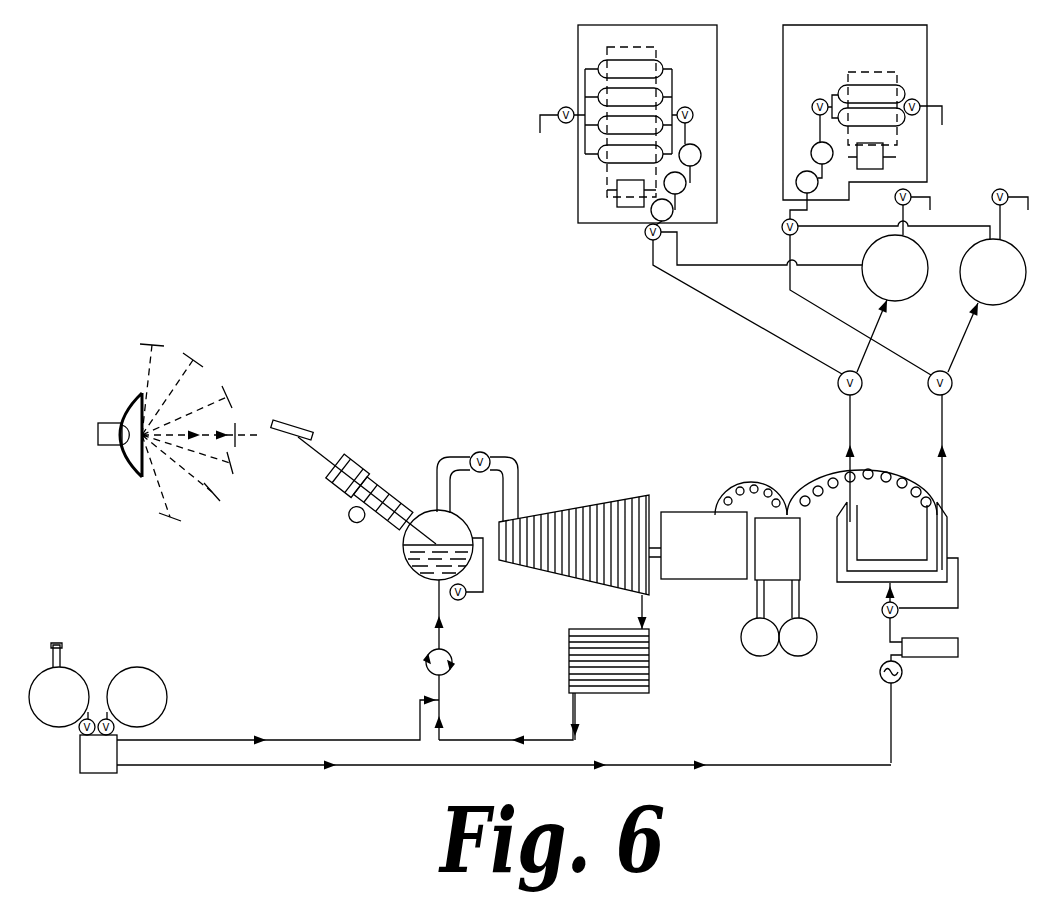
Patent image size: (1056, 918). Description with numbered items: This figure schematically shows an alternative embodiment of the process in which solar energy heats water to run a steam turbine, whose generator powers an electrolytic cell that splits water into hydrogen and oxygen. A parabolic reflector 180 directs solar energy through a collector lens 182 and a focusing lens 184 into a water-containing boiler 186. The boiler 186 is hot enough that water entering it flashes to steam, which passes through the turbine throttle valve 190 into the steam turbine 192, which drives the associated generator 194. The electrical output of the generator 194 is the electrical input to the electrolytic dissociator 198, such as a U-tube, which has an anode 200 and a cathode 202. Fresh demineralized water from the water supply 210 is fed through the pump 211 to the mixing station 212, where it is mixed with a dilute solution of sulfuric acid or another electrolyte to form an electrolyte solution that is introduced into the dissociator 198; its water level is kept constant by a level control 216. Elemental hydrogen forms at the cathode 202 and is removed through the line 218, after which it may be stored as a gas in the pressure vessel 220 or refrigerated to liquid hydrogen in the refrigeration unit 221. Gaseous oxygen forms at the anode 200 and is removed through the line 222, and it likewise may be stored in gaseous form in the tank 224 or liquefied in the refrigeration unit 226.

The parabolic reflector 180 is at (128, 402).
The collector lens 182 is at (368, 478).
The focusing lens 184 is at (383, 492).
The boiler 186 is at (405, 562).
The turbine throttle valve 190 is at (484, 454).
The steam turbine 192 is at (590, 505).
The generator 194 is at (715, 555).
The electrolytic dissociator 198 is at (848, 585).
The anode 200 is at (862, 534).
The cathode 202 is at (947, 532).
The water supply 210 is at (111, 766).
The pump 211 is at (880, 676).
The mixing station 212 is at (952, 669).
The level control 216 is at (882, 618).
The line 218 is at (944, 430).
The pressure vessel 220 is at (1010, 287).
The refrigeration unit 221 is at (930, 38).
The line 222 is at (848, 420).
The tank 224 is at (912, 283).
The refrigeration unit 226 is at (578, 45).